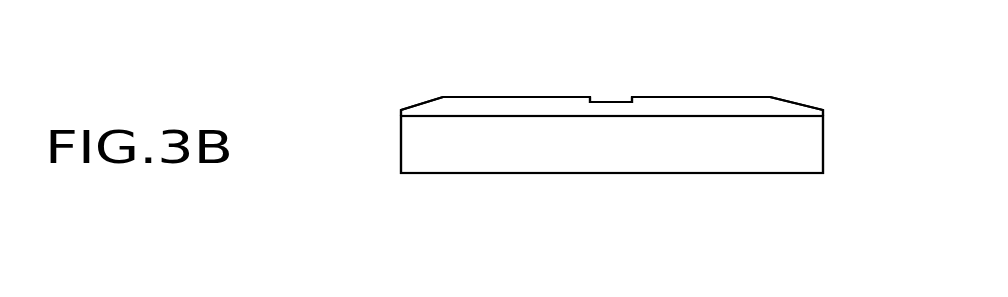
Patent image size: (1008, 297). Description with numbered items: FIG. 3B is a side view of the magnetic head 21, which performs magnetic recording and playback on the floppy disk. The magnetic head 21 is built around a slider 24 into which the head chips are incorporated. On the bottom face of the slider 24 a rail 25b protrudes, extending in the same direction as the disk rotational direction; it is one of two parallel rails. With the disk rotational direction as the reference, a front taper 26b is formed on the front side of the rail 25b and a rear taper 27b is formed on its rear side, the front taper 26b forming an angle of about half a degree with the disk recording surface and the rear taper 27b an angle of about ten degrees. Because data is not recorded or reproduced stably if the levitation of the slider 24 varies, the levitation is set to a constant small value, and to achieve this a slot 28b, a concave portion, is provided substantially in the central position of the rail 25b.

The magnetic head 21 is at (396, 195).
The slider 24 is at (692, 163).
The rail 25b is at (700, 97).
The front taper 26b is at (422, 103).
The rear taper 27b is at (795, 103).
The slot 28b is at (613, 102).